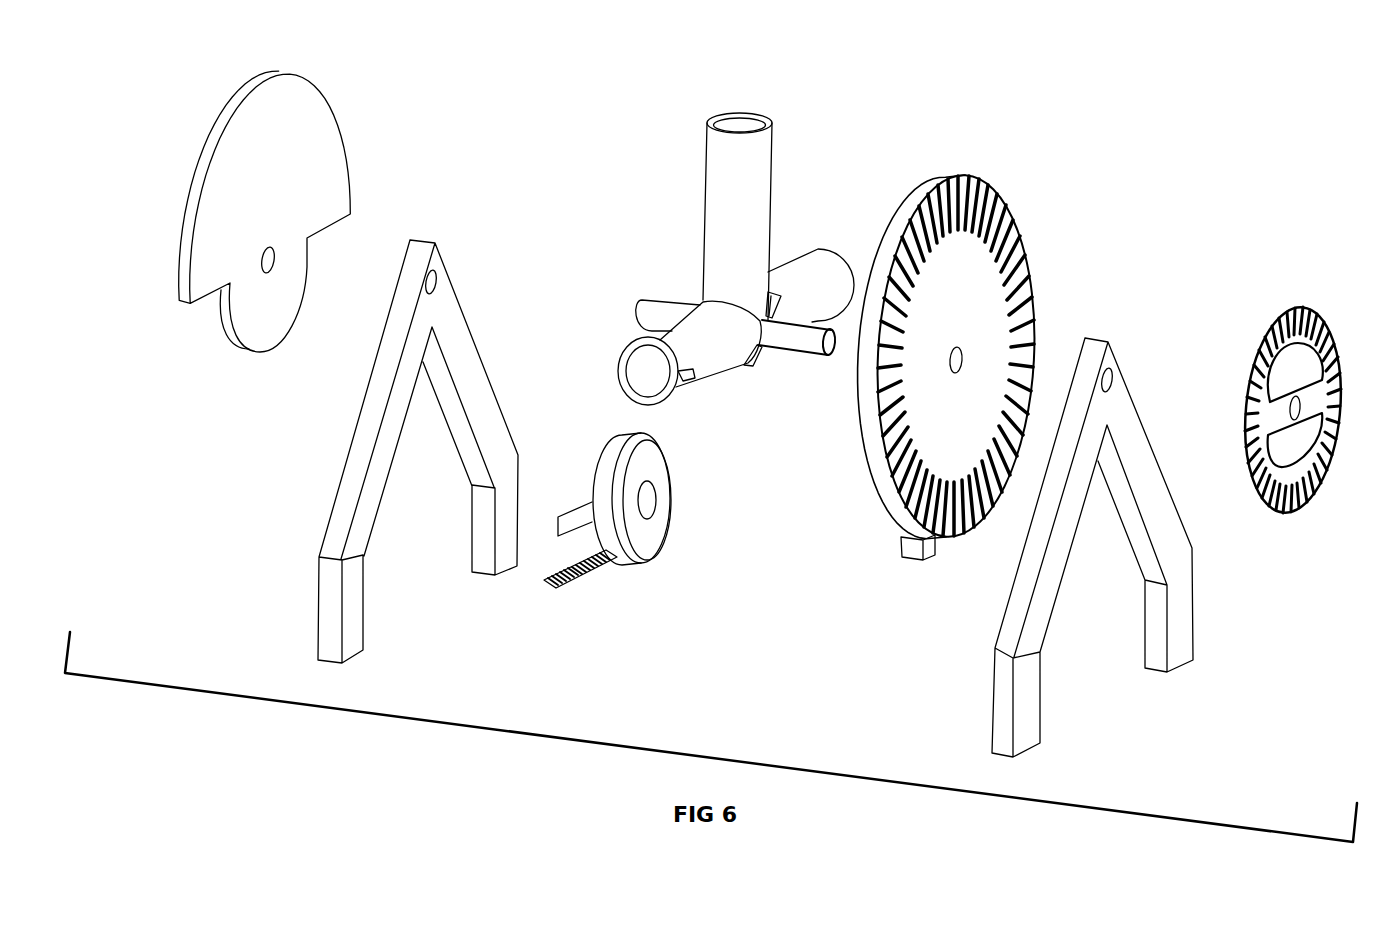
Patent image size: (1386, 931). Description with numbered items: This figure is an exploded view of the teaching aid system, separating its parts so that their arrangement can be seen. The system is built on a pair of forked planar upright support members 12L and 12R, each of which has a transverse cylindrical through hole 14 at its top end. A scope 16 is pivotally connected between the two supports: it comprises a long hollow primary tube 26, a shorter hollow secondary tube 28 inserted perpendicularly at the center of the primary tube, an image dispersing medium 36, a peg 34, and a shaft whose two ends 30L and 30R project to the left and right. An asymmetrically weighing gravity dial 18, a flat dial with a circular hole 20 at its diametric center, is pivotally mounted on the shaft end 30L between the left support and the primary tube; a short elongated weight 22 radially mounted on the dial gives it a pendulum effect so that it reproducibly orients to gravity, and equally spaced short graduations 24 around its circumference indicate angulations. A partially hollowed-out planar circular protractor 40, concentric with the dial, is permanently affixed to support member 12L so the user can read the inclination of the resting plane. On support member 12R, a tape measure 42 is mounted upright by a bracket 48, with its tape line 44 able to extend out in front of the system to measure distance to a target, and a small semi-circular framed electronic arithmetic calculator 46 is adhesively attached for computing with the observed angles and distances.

The right forked planar upright support member 12R is at (337, 535).
The left forked planar upright support member 12L is at (1000, 697).
The transverse cylindrical through hole 14 is at (1115, 373).
The scope 16 is at (701, 249).
The asymmetrically weighing gravity dial 18 is at (989, 372).
The circular hole 20 is at (962, 350).
The short elongated weight 22 is at (915, 560).
The short graduations 24 is at (1020, 228).
The long hollow primary tube 26 is at (700, 333).
The shorter hollow secondary tube 28 is at (758, 170).
The right end of shaft 30R is at (642, 308).
The left end of shaft 30L is at (818, 355).
The peg 34 is at (687, 375).
The image dispersing medium 36 is at (779, 292).
The planar circular protractor 40 is at (1296, 305).
The tape measure 42 is at (640, 553).
The tape line 44 is at (541, 585).
The semi-circular framed electronic arithmetic calculator 46 is at (302, 107).
The bracket 48 is at (580, 508).